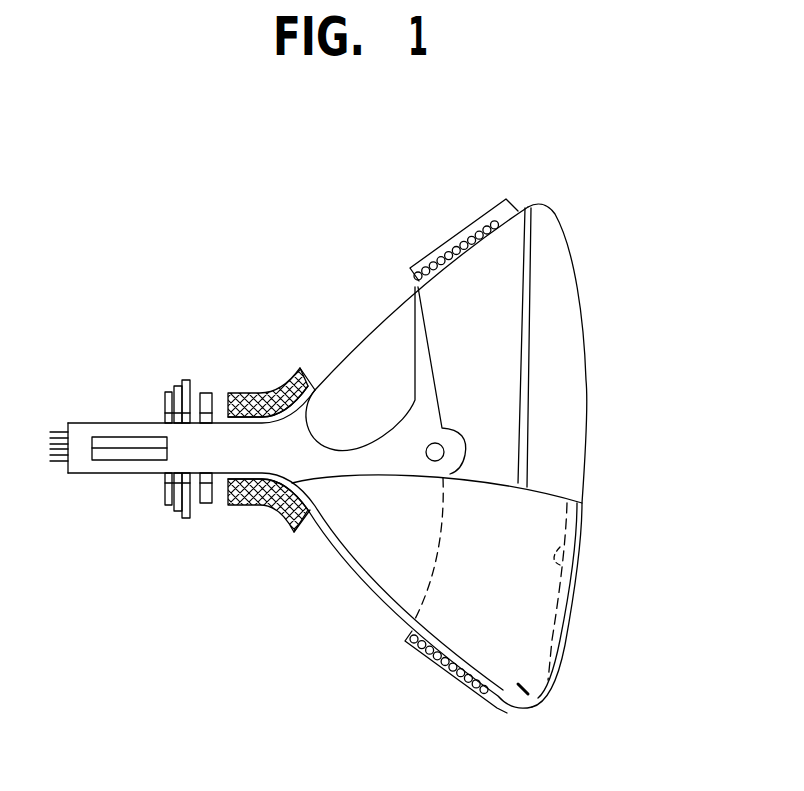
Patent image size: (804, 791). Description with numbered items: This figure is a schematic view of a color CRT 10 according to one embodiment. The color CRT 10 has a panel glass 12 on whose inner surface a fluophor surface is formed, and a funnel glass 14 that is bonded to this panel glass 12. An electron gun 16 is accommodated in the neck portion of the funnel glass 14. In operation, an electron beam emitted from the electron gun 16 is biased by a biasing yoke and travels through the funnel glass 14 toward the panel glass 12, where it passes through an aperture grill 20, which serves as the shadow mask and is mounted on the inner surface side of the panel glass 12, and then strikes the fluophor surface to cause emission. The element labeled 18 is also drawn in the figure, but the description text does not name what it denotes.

The color CRT 10 is at (383, 297).
The panel glass 12 is at (578, 595).
The funnel glass 14 is at (347, 563).
The electron gun 16 is at (143, 421).
The seal ring 18 is at (270, 392).
The aperture grill 20 is at (562, 548).